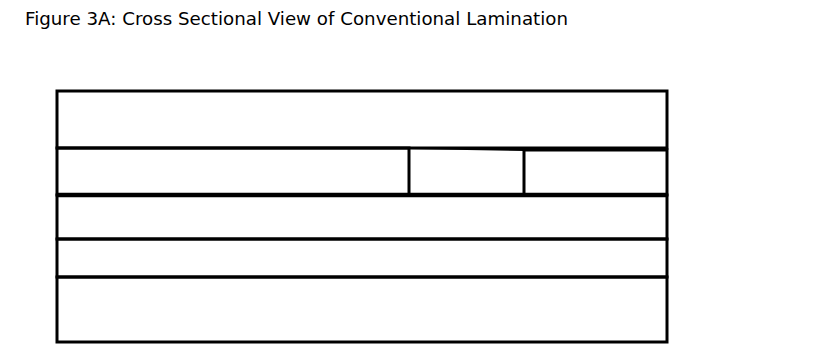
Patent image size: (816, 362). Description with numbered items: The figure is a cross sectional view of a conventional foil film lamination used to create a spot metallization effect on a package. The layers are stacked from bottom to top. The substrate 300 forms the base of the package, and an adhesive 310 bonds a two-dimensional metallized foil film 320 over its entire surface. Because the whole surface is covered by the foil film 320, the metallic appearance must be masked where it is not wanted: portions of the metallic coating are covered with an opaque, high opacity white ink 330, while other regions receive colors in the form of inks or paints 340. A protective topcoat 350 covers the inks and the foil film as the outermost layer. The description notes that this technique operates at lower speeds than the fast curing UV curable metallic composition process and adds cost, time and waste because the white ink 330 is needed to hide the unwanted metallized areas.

The protective topcoat 350 is at (582, 106).
The colors (inks/paints) layer 340 is at (369, 170).
The white ink layer 330 is at (614, 186).
The foil film 320 is at (484, 219).
The adhesive 310 is at (484, 266).
The substrate 300 is at (484, 314).